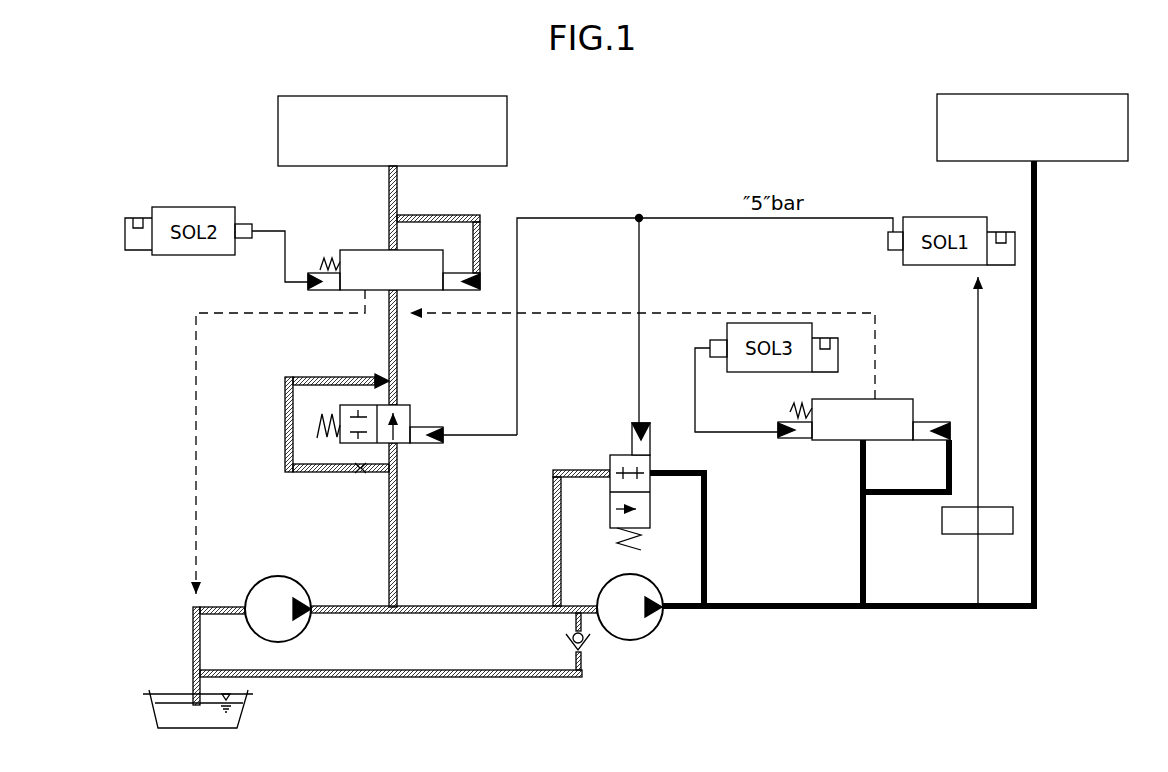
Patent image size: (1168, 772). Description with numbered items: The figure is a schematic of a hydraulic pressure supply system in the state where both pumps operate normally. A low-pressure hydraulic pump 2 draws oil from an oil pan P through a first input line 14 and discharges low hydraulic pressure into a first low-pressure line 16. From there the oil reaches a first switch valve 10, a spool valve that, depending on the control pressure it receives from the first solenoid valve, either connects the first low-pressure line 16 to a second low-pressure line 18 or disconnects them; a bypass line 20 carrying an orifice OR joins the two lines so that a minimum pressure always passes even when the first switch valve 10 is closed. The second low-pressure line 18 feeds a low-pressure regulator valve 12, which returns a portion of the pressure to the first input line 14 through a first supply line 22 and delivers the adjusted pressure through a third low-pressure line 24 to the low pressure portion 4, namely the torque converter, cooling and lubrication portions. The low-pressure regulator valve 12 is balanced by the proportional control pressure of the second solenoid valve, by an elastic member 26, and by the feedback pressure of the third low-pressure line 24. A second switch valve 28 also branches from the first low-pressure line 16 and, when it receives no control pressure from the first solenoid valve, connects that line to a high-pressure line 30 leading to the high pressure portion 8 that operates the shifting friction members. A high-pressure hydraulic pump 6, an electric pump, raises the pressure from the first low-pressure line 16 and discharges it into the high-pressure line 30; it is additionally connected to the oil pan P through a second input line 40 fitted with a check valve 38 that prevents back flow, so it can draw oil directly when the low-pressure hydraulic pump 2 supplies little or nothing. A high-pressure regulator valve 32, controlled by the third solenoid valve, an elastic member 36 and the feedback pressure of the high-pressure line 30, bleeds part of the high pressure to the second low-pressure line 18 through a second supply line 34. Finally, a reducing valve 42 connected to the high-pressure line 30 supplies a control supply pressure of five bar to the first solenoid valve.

The low-pressure hydraulic pump 2 is at (263, 570).
The low pressure portion 4 is at (507, 129).
The high-pressure hydraulic pump 6 is at (664, 639).
The high pressure portion 8 is at (937, 127).
The first switch valve 10 is at (424, 393).
The low-pressure regulator valve 12 is at (433, 238).
The first input line 14 is at (193, 632).
The first low-pressure line 16 is at (472, 605).
The second low-pressure line 18 is at (389, 350).
The bypass line 20 is at (285, 425).
The first supply line 22 is at (195, 355).
The third low-pressure line 24 is at (389, 187).
The elastic member 26 is at (328, 258).
The second switch valve 28 is at (612, 441).
The high-pressure line 30 is at (777, 612).
The high-pressure regulator valve 32 is at (846, 473).
The second supply line 34 is at (568, 311).
The elastic member 36 is at (790, 408).
The check valve 38 is at (600, 656).
The second input line 40 is at (393, 678).
The reducing valve 42 is at (1022, 546).
The orifice OR is at (354, 477).
The oil pan P is at (142, 719).